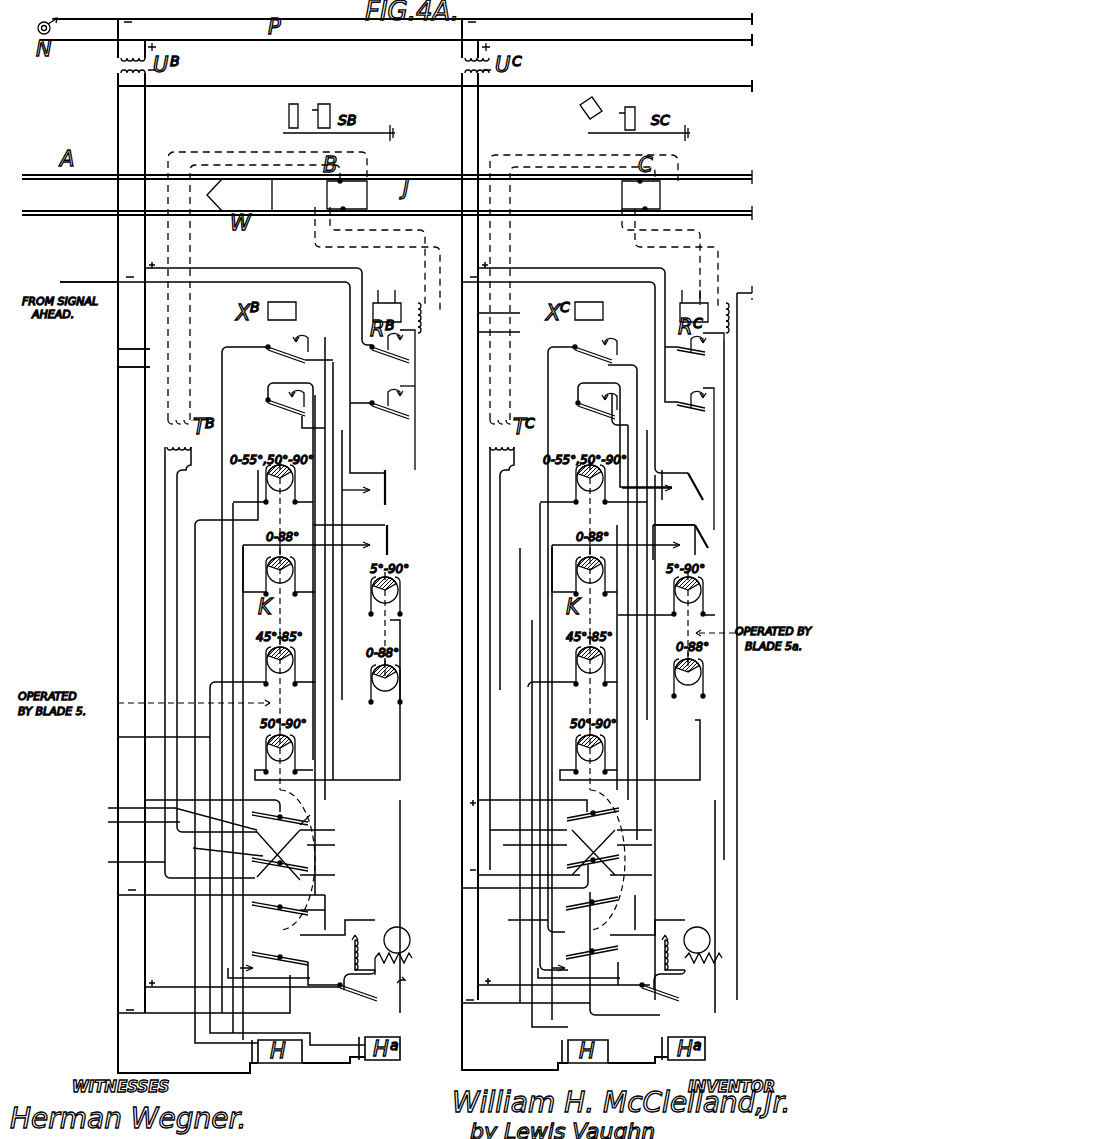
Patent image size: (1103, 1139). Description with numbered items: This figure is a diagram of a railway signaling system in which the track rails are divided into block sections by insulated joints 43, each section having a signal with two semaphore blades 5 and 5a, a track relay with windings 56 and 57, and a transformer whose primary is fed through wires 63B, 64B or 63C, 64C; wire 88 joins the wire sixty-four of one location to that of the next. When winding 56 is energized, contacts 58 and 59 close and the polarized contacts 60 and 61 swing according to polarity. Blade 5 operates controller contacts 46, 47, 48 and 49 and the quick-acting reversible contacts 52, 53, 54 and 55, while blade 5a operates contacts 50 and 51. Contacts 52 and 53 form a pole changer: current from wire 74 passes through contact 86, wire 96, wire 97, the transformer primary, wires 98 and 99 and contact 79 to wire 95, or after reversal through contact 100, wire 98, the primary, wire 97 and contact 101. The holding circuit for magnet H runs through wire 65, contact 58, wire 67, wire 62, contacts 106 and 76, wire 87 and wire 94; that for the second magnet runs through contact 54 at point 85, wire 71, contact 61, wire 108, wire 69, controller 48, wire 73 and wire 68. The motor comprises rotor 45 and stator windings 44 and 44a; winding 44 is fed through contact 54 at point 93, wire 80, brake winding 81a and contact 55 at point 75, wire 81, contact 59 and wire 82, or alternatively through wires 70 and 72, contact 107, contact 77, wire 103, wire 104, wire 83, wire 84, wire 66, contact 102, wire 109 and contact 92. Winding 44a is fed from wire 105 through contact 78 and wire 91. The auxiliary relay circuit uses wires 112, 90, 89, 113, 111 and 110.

The semaphore blade 5 is at (289, 106).
The semaphore blade 5a is at (330, 108).
The wire 88 is at (265, 86).
The insulated joints 43 is at (493, 195).
The wire 65 is at (253, 268).
The wire 82 is at (280, 282).
The wire 113 is at (743, 421).
The winding 57 is at (390, 296).
The wire 111 is at (345, 315).
The winding 56 is at (569, 320).
The wire 63B is at (118, 349).
The wire 64B is at (118, 367).
The wire 63C is at (512, 636).
The wire 64C is at (489, 648).
The contact 102 is at (292, 356).
The contact 58 is at (400, 358).
The contact 107 is at (290, 410).
The contact 59 is at (400, 414).
The wire 72 is at (350, 437).
The wire 70 is at (342, 437).
The wire 110 is at (350, 452).
The wire 109 is at (540, 377).
The contact 46 is at (266, 470).
The contact 106 is at (268, 482).
The contact 77 is at (300, 490).
The contact 60 is at (386, 480).
The contact 76 is at (280, 498).
The wire 87 is at (195, 525).
The contact 47 is at (267, 562).
The wire 108 is at (504, 522).
The contact 61 is at (388, 535).
The wire 69 is at (325, 555).
The wire 62 is at (233, 577).
The contact 50 is at (372, 592).
The wire 112 is at (369, 614).
The wire 66 is at (333, 628).
The contact 48 is at (267, 660).
The wire 104 is at (325, 665).
The contact 51 is at (370, 678).
The wire 71 is at (243, 668).
The wire 73 is at (118, 737).
The contact 49 is at (267, 748).
The wire 90 is at (325, 724).
The wire 103 is at (325, 742).
The wire 84 is at (400, 715).
The wire 89 is at (405, 780).
The wire 74 is at (280, 810).
The wire 83 is at (325, 800).
The wire 67 is at (415, 800).
The wire 81 is at (415, 815).
The contact 100 is at (118, 810).
The wire 98 is at (118, 826).
The reversible contact 52 is at (439, 807).
The contact 86 is at (325, 831).
The wire 96 is at (325, 847).
The wire 99 is at (200, 848).
The reversible contact 53 is at (440, 855).
The wire 97 is at (118, 862).
The contact 101 is at (200, 875).
The contact 79 is at (325, 875).
The wire 95 is at (180, 900).
The contact 85 is at (255, 918).
The reversible contact 54 is at (439, 895).
The contact 93 is at (300, 925).
The wire 80 is at (340, 925).
The stator winding 44 is at (362, 935).
The rotor 45 is at (398, 926).
The reversible contact 55 is at (439, 944).
The brake winding 81a is at (348, 948).
The contact 92 is at (406, 970).
The contact 75 is at (295, 965).
The wire 105 is at (170, 993).
The wire 91 is at (300, 1013).
The contact 78 is at (355, 995).
The stator winding 44a is at (398, 980).
The wire 94 is at (205, 1073).
The wire 68 is at (318, 1073).